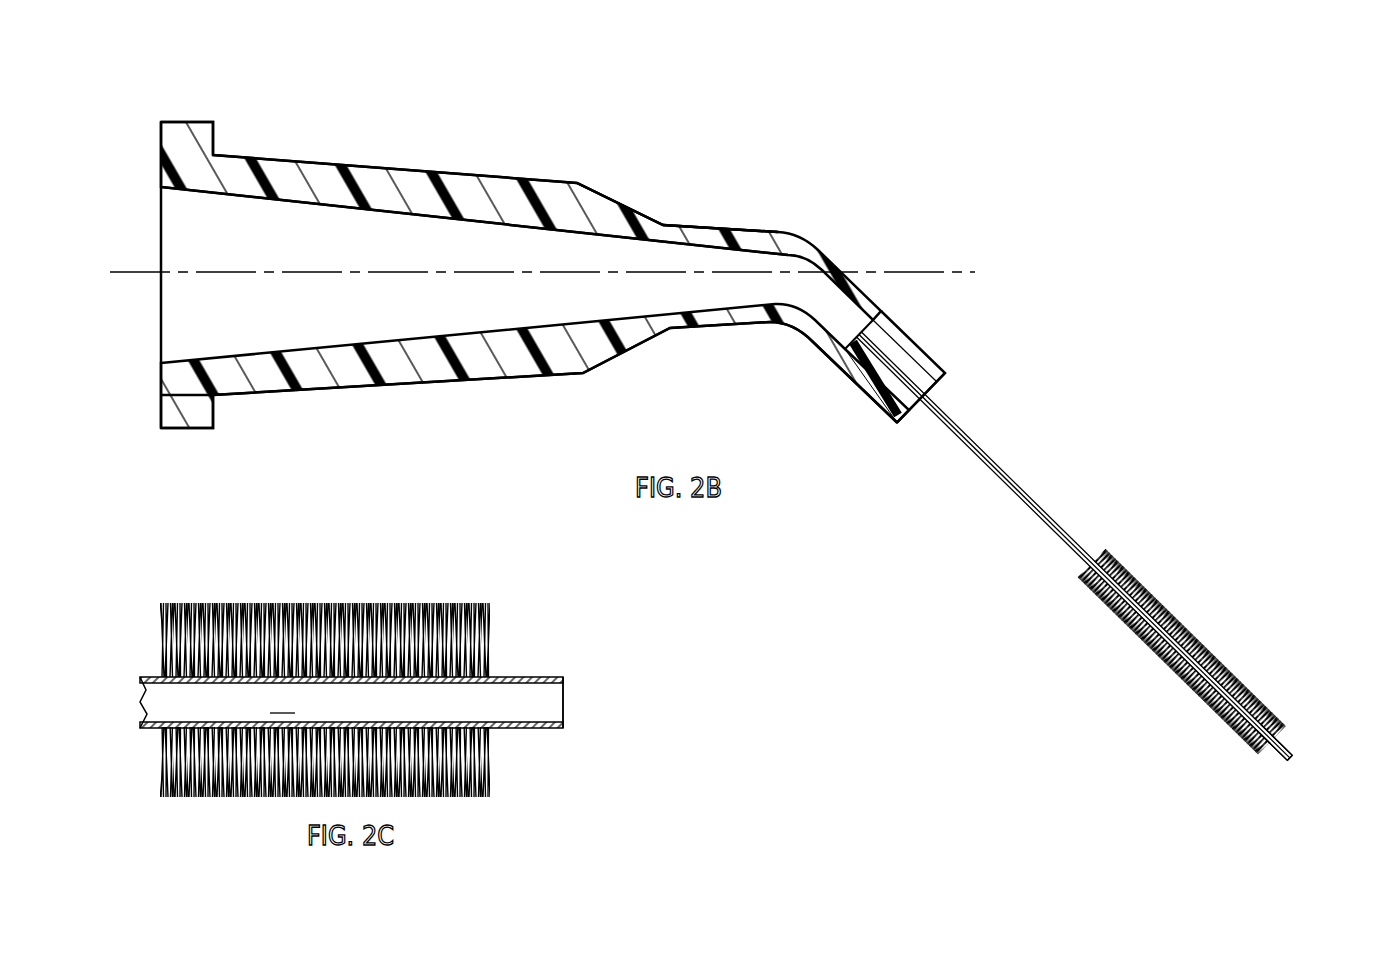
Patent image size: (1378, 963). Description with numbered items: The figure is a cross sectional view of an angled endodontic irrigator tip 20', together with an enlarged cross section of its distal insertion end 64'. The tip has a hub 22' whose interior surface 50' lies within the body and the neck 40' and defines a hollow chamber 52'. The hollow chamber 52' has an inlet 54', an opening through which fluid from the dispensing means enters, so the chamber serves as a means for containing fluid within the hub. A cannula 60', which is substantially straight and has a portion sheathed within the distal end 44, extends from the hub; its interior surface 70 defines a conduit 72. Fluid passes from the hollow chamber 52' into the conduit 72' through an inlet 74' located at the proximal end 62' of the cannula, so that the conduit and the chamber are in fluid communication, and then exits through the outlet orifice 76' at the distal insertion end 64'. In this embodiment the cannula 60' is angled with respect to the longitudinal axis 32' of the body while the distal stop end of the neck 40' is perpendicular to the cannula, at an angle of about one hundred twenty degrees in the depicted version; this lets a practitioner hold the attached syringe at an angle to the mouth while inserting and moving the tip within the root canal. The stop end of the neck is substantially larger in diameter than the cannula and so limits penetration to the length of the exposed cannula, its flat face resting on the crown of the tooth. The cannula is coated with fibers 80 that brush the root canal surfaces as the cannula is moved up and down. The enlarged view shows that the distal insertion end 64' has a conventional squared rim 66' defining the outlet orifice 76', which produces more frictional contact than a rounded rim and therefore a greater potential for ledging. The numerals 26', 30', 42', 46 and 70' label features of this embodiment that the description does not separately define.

In FIG. 2B, the endodontic irrigator tip 20' is at (542, 141).
In FIG. 2B, the hub 22' is at (553, 246).
In FIG. 2B, the flange 26' is at (226, 445).
In FIG. 2B, the tapered transition section 30' is at (648, 169).
In FIG. 2B, the longitudinal axis 32' is at (429, 214).
In FIG. 2B, the neck 40' is at (833, 374).
In FIG. 2B, the reduced diameter section 42' is at (720, 209).
In FIG. 2B, the distal end 44 is at (933, 358).
In FIG. 2B, the outlet end face 46 is at (948, 378).
In FIG. 2B, the interior surface 50' is at (551, 148).
In FIG. 2B, the hollow chamber 52' is at (491, 372).
In FIG. 2B, the inlet 54' is at (150, 140).
In FIG. 2B, the cannula 60' is at (1182, 618).
In FIG. 2C, the cannula 60' is at (289, 752).
In FIG. 2B, the proximal end 62' is at (933, 401).
In FIG. 2B, the distal insertion end 64' is at (1297, 720).
In FIG. 2C, the distal insertion end 64' is at (603, 637).
In FIG. 2C, the squared rim 66' is at (407, 665).
In FIG. 2B, the brush stem wire 70' is at (1075, 546).
In FIG. 2C, the interior surface 70 is at (116, 648).
In FIG. 2B, the conduit 72' is at (1074, 546).
In FIG. 2C, the conduit 72 is at (354, 702).
In FIG. 2B, the inlet 74' is at (899, 271).
In FIG. 2B, the outlet orifice 76' is at (1315, 777).
In FIG. 2C, the outlet orifice 76' is at (586, 705).
In FIG. 2B, the fibers 80 is at (1218, 665).
In FIG. 2C, the fibers 80 is at (330, 620).